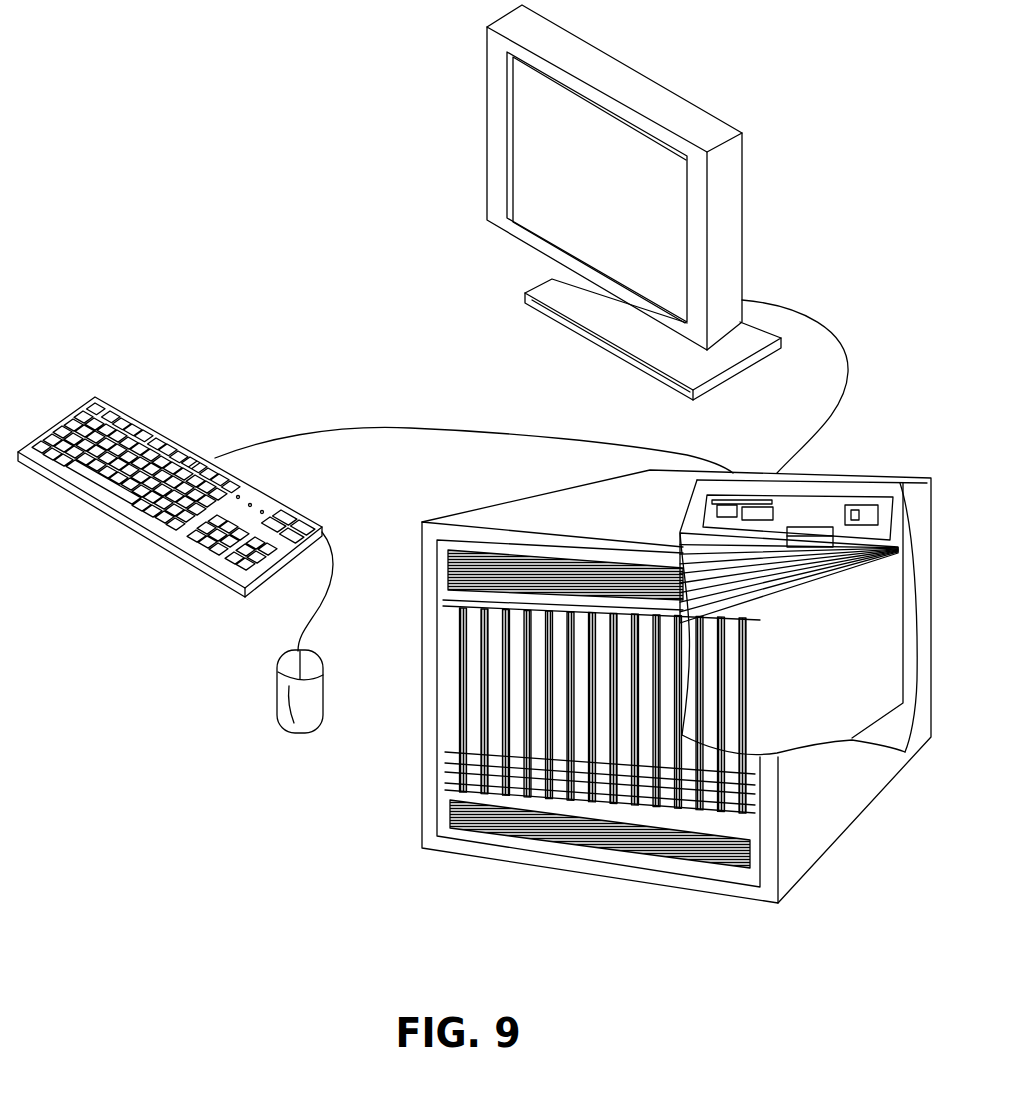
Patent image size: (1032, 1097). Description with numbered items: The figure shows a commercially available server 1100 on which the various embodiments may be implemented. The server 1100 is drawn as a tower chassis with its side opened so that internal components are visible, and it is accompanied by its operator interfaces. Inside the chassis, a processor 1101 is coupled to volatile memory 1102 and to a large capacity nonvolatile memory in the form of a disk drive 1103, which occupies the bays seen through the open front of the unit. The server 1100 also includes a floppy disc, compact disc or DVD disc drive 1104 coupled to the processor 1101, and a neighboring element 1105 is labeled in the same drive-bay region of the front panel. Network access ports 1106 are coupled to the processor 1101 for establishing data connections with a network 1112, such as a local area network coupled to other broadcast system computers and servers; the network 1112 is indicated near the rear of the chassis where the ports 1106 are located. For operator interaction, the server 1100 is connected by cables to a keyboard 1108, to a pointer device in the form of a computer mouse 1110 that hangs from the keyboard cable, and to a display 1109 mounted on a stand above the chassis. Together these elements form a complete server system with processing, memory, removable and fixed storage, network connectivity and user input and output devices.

The server 1100 is at (517, 500).
The processor 1101 is at (705, 532).
The volatile memory 1102 is at (896, 530).
The disk drive 1103 is at (495, 655).
The disc drive 1104 is at (452, 715).
The drive bay frame 1105 is at (472, 685).
The network access ports 1106 is at (818, 538).
The keyboard 1108 is at (168, 438).
The display 1109 is at (742, 236).
The computer mouse 1110 is at (283, 733).
The network 1112 is at (858, 500).